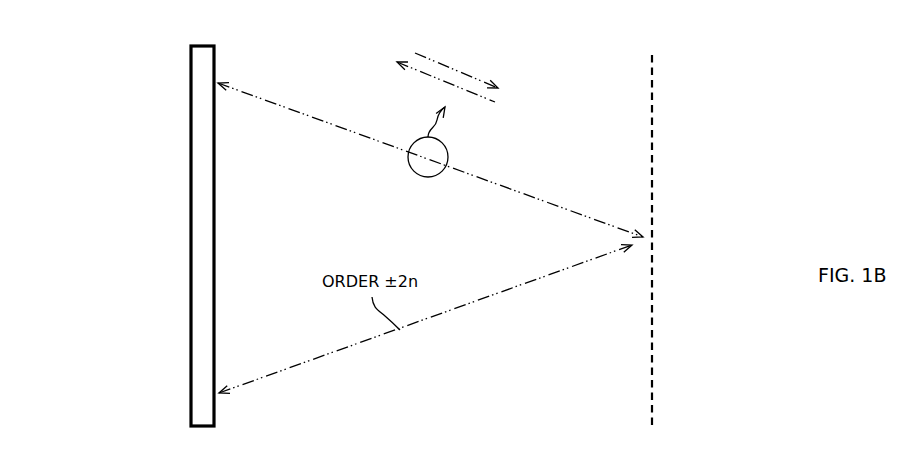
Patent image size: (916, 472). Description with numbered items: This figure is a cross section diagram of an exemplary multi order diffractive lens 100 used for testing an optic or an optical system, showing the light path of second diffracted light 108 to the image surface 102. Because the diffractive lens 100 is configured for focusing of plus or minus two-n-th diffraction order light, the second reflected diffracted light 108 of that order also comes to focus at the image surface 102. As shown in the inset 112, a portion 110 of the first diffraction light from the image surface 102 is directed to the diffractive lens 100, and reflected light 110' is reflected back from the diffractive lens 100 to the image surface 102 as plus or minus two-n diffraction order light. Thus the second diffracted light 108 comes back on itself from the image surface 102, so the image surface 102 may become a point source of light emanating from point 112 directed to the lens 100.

The multi order diffractive lens 100 is at (197, 290).
The image surface 102 is at (652, 125).
The second diffracted light 108 is at (335, 125).
The portion of first diffraction light 110 is at (439, 83).
The reflected light 110' is at (461, 55).
The inset / point 112 is at (425, 177).